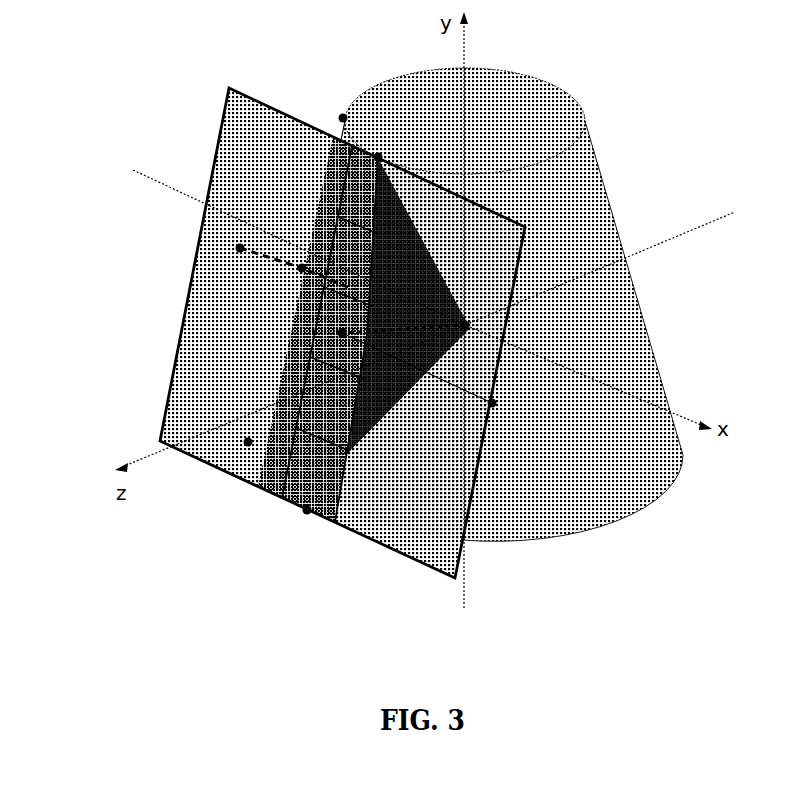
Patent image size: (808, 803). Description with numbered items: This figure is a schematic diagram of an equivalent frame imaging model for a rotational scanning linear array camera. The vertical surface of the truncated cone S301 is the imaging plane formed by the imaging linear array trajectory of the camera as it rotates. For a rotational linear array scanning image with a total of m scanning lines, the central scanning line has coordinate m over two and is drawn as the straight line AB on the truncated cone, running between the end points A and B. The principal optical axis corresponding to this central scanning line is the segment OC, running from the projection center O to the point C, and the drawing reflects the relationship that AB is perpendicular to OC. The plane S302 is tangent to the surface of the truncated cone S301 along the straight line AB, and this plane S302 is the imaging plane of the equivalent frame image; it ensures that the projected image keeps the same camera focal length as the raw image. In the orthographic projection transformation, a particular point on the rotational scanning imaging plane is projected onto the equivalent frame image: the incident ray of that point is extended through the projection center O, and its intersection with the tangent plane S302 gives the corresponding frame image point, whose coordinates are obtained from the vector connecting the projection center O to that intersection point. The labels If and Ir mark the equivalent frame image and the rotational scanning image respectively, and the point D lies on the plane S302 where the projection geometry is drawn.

The truncated cone S301 is at (501, 296).
The plane S302 is at (298, 333).
The floating image If is at (249, 127).
The reference image Ir is at (612, 492).
The central scanning line endpoint A is at (381, 144).
The central scanning line endpoint B is at (307, 528).
The principal optical axis endpoint C is at (332, 346).
The point D is at (504, 412).
The projection center O is at (458, 305).